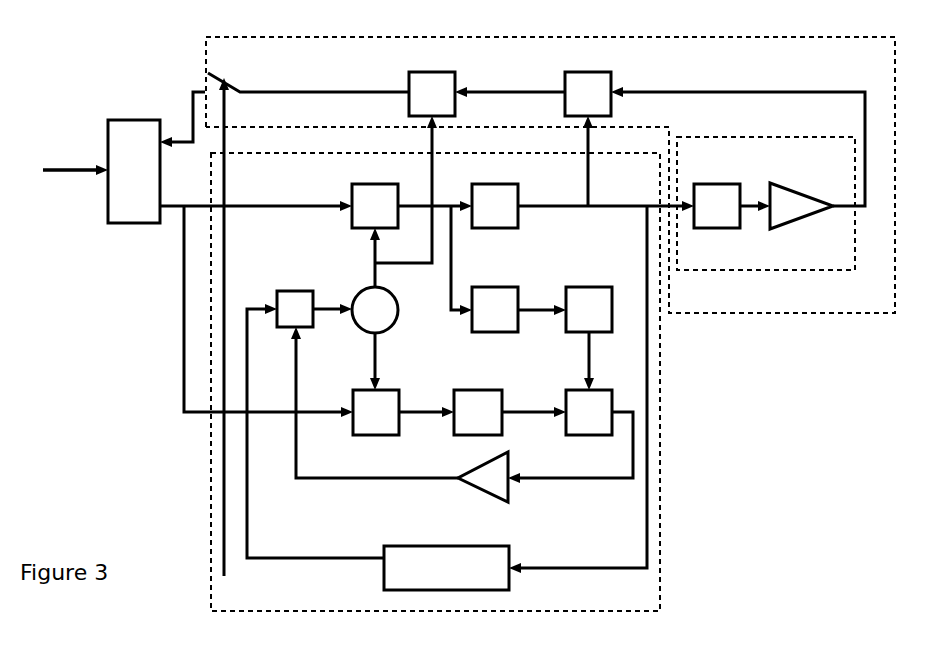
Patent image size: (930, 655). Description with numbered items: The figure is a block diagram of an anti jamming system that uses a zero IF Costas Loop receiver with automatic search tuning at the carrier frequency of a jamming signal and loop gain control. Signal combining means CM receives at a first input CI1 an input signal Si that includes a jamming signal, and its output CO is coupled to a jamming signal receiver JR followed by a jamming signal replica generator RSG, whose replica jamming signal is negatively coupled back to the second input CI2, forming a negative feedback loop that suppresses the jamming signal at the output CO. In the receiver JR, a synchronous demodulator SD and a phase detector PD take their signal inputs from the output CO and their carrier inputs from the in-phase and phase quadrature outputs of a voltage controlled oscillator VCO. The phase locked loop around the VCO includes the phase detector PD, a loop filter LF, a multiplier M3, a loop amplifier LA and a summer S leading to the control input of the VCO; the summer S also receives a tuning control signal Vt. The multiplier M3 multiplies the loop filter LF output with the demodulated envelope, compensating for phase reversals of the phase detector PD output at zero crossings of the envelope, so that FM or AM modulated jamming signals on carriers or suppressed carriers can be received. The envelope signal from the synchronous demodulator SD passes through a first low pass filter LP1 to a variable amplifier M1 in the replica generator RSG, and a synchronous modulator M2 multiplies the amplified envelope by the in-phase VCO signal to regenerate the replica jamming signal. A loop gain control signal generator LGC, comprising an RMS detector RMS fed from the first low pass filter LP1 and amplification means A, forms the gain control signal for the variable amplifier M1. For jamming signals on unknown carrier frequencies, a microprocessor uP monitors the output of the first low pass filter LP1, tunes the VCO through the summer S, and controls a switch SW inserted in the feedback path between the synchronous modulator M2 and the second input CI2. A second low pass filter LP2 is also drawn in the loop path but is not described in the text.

The signal combining means CM is at (134, 161).
The input signal Si is at (68, 166).
The first input CI1 is at (108, 172).
The second input CI2 is at (162, 144).
The output CO is at (163, 203).
The controllable switch SW is at (308, 322).
The synchronous modulator M2 is at (470, 157).
The variable amplifier M1 is at (715, 128).
The synchronous demodulator SD is at (412, 196).
The first low pass filter LP1 is at (583, 196).
The RMS detector RMS is at (732, 196).
The amplification means A is at (801, 199).
The loop gain control signal generator LGC is at (766, 221).
The jamming signal replica generator RSG is at (550, 194).
The tuning control signal Vt is at (273, 304).
The summer S is at (314, 299).
The voltage controlled oscillator VCO is at (365, 309).
The second low-pass filter LP2 is at (484, 269).
The phase detector PD is at (403, 403).
The loop filter LF is at (510, 403).
The multiplier M3 is at (570, 427).
The loop amplifier LA is at (399, 414).
The jamming signal receiver JR is at (457, 382).
The microprocessor uP is at (515, 398).